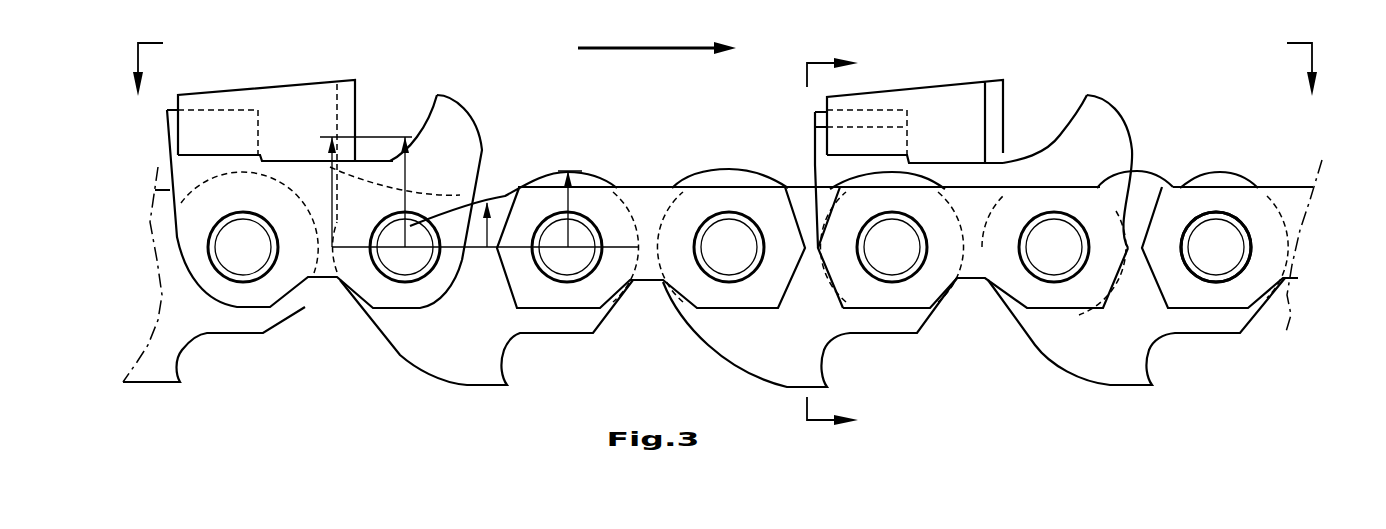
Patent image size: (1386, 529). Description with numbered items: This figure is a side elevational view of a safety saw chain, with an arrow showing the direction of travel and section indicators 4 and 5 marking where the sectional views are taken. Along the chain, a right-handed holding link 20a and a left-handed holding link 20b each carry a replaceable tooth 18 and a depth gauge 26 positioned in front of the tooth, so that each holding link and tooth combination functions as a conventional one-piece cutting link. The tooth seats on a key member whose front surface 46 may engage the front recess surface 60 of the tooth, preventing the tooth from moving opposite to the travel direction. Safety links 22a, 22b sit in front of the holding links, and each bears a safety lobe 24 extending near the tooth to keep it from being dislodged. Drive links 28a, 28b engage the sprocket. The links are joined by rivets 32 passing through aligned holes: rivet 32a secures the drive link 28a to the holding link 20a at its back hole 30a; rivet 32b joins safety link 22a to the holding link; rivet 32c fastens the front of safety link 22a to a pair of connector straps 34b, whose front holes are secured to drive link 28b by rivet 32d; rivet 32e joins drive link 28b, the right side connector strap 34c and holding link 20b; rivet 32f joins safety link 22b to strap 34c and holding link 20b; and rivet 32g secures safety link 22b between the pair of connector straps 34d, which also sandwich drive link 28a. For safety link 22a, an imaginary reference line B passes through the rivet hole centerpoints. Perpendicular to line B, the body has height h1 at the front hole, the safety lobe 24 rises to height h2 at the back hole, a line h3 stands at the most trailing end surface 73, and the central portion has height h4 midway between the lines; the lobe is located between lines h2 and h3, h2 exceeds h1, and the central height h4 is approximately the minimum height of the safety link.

The replaceable tooth 18 is at (320, 97).
The most trailing end surface 73 is at (327, 187).
The safety lobe 24 is at (367, 157).
The depth gauge 26 is at (463, 123).
The right-handed holding link 20a is at (468, 167).
The left-handed holding link 20b is at (1117, 137).
The back hole 30a is at (420, 222).
The connector straps 34b is at (645, 207).
The right side connector strap 34c is at (1120, 178).
The connector straps 34d is at (1203, 200).
The rivet 32 is at (1232, 240).
The rivet 32a is at (248, 257).
The rivet 32b is at (410, 260).
The rivet 32c is at (577, 237).
The rivet 32d is at (728, 243).
The rivet 32e is at (890, 267).
The rivet 32f is at (1057, 257).
The rivet 32g is at (1220, 267).
The safety link 22a is at (465, 345).
The safety link 22b is at (1110, 332).
The drive link 28a is at (153, 363).
The drive link 28b is at (767, 358).
The front recess surface 60 is at (907, 135).
The front surface 46 is at (907, 117).
The height h1 is at (563, 228).
The height h2 is at (403, 202).
The line h3 is at (330, 172).
The height h4 is at (485, 243).
The reference line B is at (558, 250).
The section line 4 is at (724, 83).
The section line 5 is at (843, 242).